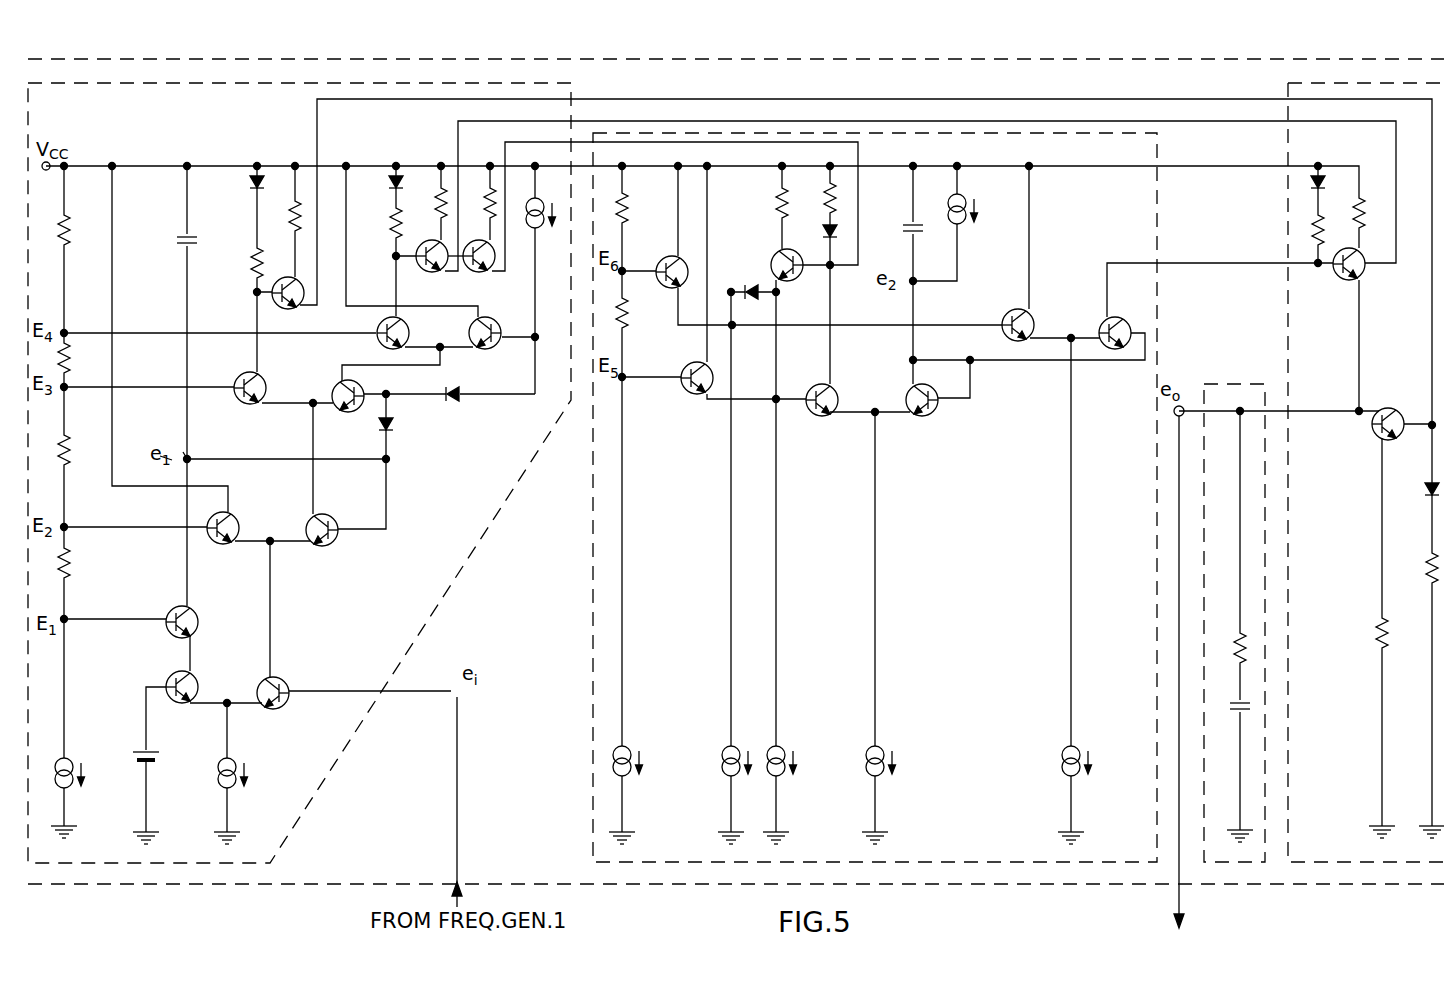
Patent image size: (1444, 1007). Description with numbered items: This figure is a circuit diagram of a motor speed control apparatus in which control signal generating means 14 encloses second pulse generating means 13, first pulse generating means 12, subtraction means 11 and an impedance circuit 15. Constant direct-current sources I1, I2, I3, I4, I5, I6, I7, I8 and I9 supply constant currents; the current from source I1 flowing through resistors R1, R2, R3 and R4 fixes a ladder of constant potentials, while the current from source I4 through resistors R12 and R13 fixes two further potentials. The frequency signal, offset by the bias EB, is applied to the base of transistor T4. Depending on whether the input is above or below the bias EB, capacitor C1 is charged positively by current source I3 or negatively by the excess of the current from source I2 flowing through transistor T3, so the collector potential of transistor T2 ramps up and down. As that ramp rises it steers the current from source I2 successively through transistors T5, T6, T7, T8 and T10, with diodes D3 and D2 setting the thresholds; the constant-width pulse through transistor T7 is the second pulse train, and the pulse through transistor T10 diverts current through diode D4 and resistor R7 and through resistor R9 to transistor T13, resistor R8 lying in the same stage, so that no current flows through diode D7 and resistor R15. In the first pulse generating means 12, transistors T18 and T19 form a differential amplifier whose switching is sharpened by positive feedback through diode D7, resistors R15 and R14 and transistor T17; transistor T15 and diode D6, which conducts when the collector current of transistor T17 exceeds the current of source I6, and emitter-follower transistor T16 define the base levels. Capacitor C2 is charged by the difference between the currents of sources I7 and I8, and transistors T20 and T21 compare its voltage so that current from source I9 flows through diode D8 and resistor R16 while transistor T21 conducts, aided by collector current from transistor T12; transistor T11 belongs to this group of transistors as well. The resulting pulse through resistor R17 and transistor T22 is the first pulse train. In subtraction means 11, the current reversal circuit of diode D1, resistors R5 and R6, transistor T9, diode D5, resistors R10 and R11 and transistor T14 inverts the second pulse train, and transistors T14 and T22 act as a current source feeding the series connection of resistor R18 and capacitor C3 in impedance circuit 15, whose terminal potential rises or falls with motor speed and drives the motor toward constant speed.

The subtraction means 11 is at (1286, 336).
The first pulse generating means 12 is at (1157, 322).
The second pulse generating means 13 is at (462, 562).
The control signal generating means 14 is at (1120, 57).
The impedance circuit 15 is at (1232, 384).
The resistor R1 is at (72, 242).
The resistor R2 is at (72, 370).
The resistor R3 is at (72, 462).
The resistor R4 is at (72, 578).
The resistor R5 is at (242, 260).
The resistor R6 is at (279, 216).
The resistor R7 is at (379, 224).
The resistor R8 is at (427, 200).
The resistor R9 is at (477, 196).
The resistor R10 is at (1414, 565).
The resistor R11 is at (1378, 638).
The resistor R12 is at (640, 206).
The resistor R13 is at (640, 311).
The resistor R14 is at (764, 199).
The resistor R15 is at (815, 197).
The resistor R16 is at (1333, 230).
The resistor R17 is at (1374, 211).
The resistor R18 is at (1224, 637).
The capacitor C1 is at (178, 242).
The capacitor C2 is at (903, 217).
The capacitor C3 is at (1226, 690).
The diode D1 is at (243, 191).
The diode D2 is at (452, 403).
The diode D3 is at (394, 430).
The diode D4 is at (379, 185).
The diode D5 is at (1415, 487).
The diode D6 is at (736, 278).
The diode D7 is at (813, 235).
The diode D8 is at (1329, 185).
The constant D.C. current source I1 is at (60, 768).
The constant D.C. current source I2 is at (220, 768).
The constant D.C. current source I3 is at (528, 208).
The constant D.C. current source I4 is at (616, 758).
The constant D.C. current source I5 is at (722, 764).
The constant D.C. current source I6 is at (768, 770).
The constant D.C. current source I7 is at (866, 767).
The constant D.C. current source I8 is at (948, 203).
The constant D.C. current source I9 is at (1062, 766).
The bias EB is at (136, 752).
The transistor T2 is at (196, 614).
The transistor T3 is at (202, 672).
The transistor T4 is at (282, 681).
The transistor T5 is at (244, 510).
The transistor T6 is at (333, 508).
The transistor T7 is at (240, 380).
The transistor T8 is at (356, 384).
The transistor T9 is at (280, 309).
The transistor T10 is at (408, 330).
The transistor T11 is at (494, 312).
The transistor T12 is at (418, 272).
The transistor T13 is at (470, 272).
The transistor T14 is at (1412, 398).
The transistor T15 is at (662, 262).
The transistor T16 is at (688, 366).
The transistor T17 is at (777, 255).
The transistor T18 is at (812, 390).
The transistor T19 is at (906, 392).
The transistor T20 is at (1012, 306).
The transistor T21 is at (1100, 326).
The transistor T22 is at (1338, 282).